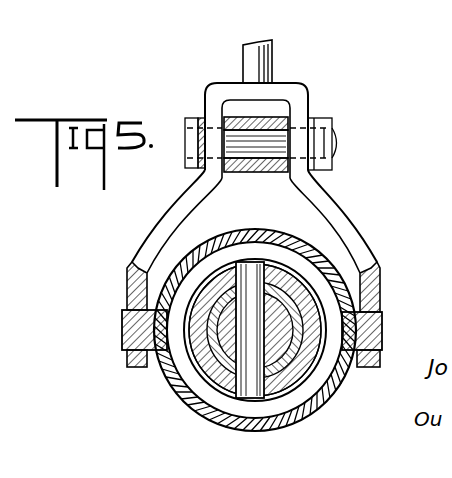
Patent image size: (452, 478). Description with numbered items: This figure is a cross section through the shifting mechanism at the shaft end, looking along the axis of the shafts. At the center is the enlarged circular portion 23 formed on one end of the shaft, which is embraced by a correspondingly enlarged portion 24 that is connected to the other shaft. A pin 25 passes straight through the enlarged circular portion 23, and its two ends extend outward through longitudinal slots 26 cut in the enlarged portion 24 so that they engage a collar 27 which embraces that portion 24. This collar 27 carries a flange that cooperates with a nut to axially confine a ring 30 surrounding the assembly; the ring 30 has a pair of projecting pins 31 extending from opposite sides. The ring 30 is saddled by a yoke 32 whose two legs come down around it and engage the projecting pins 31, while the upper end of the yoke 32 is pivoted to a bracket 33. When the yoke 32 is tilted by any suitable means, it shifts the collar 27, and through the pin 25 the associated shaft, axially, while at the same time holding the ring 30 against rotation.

The enlarged circular portion 23 is at (208, 403).
The enlarged portion 24 is at (200, 353).
The pin 25 is at (256, 262).
The longitudinal slots 26 is at (268, 290).
The collar 27 is at (240, 398).
The ring 30 is at (323, 397).
The projecting pins 31 is at (122, 322).
The yoke 32 is at (337, 201).
The bracket 33 is at (287, 106).